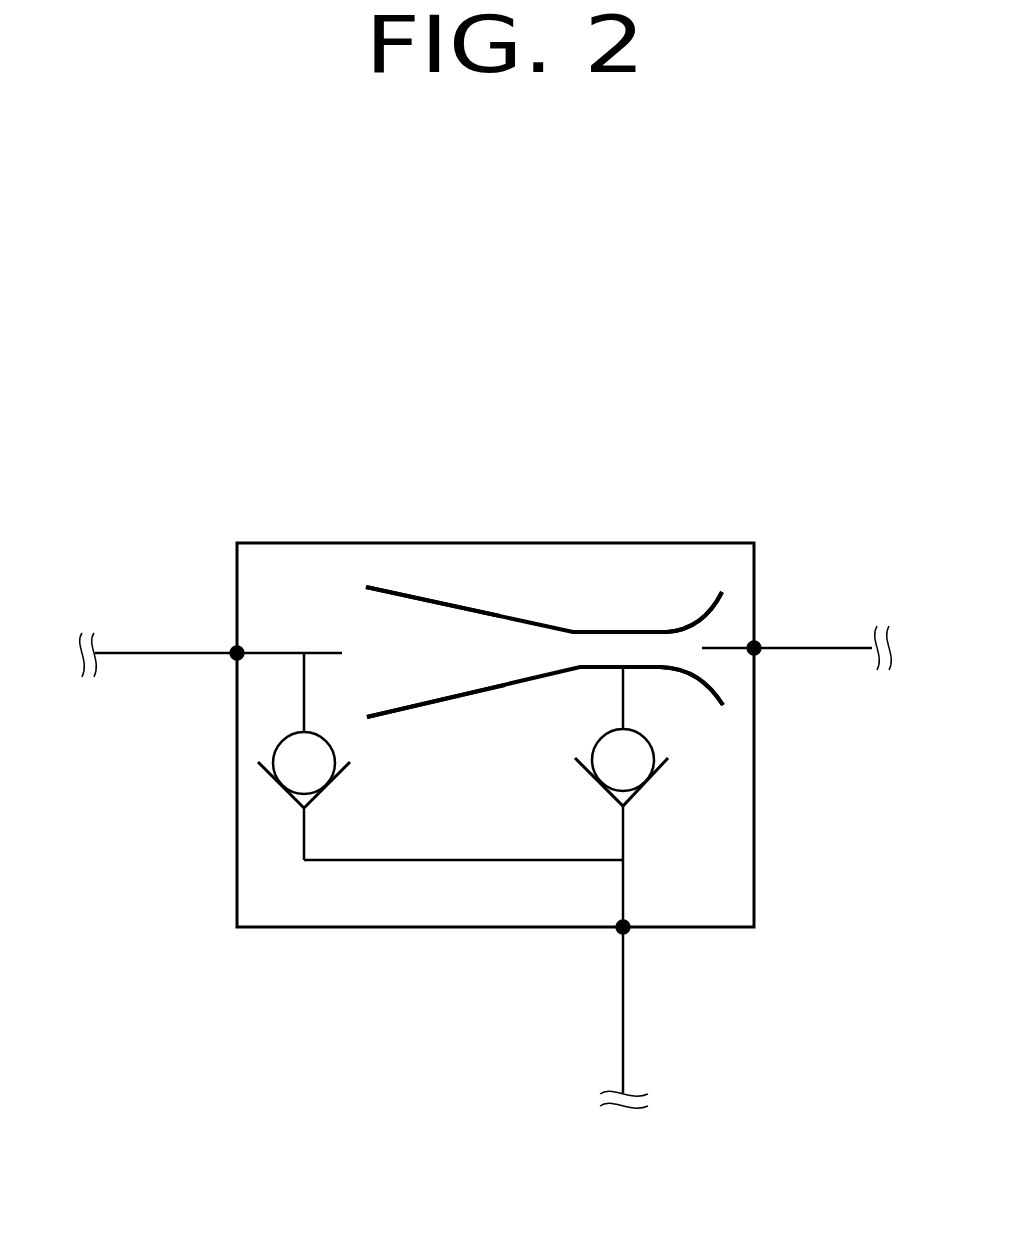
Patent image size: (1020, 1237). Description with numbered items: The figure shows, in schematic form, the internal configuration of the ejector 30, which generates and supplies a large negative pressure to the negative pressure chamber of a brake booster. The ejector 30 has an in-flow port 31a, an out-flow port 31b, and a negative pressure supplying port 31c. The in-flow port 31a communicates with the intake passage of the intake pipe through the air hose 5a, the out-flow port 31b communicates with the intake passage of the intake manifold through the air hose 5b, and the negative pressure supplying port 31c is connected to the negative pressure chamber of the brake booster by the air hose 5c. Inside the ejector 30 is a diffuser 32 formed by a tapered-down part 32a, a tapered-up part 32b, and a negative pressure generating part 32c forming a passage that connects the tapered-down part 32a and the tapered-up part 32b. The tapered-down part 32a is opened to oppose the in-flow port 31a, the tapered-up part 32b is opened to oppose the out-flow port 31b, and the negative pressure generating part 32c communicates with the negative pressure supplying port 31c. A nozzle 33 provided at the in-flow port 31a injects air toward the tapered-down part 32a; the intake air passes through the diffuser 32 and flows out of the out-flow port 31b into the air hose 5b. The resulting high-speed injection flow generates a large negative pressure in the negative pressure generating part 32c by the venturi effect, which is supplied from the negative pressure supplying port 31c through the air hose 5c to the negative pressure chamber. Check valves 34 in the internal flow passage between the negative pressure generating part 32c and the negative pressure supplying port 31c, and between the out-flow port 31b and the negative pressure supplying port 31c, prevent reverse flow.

The ejector 30 is at (348, 543).
The air hose 5a is at (830, 648).
The air hose 5b is at (142, 652).
The air hose 5c is at (623, 1033).
The in-flow port 31a is at (760, 642).
The out-flow port 31b is at (230, 658).
The negative pressure supplying port 31c is at (617, 934).
The diffuser 32 is at (497, 385).
The tapered-down part 32a is at (700, 615).
The tapered-up part 32b is at (503, 612).
The negative pressure generating part 32c is at (613, 632).
The nozzle 33 is at (720, 650).
The check valve 34 is at (277, 787).